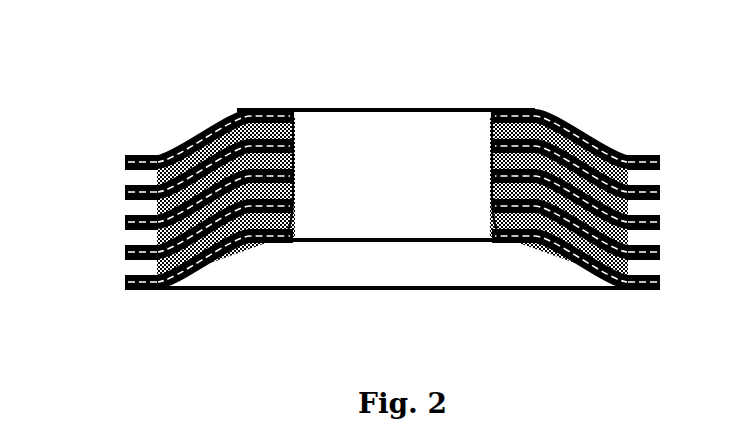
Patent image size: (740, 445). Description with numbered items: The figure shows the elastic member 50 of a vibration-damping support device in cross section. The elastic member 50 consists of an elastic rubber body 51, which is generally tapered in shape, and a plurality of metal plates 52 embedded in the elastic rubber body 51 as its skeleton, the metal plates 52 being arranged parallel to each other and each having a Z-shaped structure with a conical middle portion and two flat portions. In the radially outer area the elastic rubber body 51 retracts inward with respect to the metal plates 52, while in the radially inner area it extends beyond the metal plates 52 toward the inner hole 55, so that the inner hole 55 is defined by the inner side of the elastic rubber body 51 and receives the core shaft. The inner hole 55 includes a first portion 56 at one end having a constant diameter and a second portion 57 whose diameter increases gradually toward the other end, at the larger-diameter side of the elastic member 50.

The elastic member 50 is at (345, 146).
The elastic rubber body 51 is at (192, 140).
The metal plates 52 is at (130, 218).
The inner hole 55 is at (448, 155).
The first portion 56 is at (293, 138).
The second portion 57 is at (291, 215).